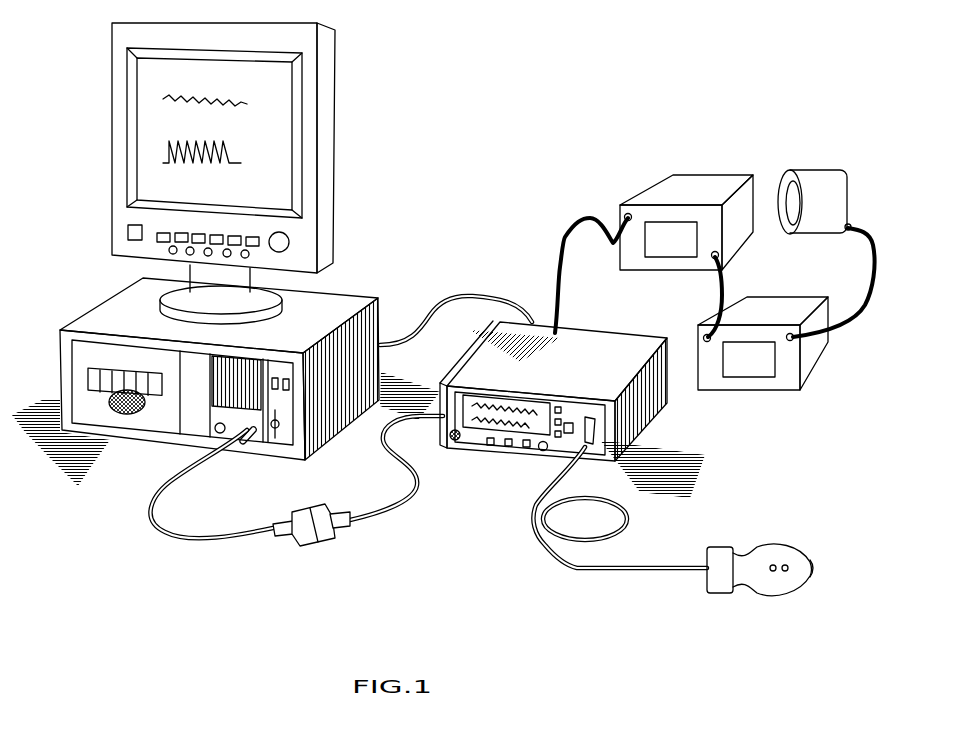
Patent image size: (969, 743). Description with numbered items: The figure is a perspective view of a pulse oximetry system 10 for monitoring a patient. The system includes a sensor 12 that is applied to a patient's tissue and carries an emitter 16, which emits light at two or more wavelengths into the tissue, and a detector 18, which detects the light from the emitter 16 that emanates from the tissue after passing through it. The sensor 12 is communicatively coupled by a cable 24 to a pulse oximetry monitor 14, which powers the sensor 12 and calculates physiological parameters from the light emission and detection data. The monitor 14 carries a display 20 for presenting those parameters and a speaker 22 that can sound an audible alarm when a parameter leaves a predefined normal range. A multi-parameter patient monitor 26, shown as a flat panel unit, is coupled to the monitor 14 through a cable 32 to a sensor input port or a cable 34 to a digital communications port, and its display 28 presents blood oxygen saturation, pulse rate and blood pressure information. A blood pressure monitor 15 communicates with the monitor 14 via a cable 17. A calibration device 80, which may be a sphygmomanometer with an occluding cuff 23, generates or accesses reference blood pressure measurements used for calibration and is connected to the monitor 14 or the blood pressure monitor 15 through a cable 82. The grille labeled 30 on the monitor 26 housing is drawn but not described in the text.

The pulse oximetry system 10 is at (565, 130).
The sensor 12 is at (822, 547).
The pulse oximetry monitor 14 is at (602, 330).
The blood pressure monitor 15 is at (700, 177).
The emitter 16 is at (772, 573).
The cable 17 is at (563, 230).
The detector 18 is at (785, 575).
The display 20 is at (480, 423).
The speaker 22 is at (453, 445).
The occluding cuff 23 is at (830, 170).
The cable 24 is at (543, 555).
The multi-parameter patient monitor 26 is at (328, 74).
The display 28 is at (153, 152).
The speaker 30 is at (115, 418).
The cable 32 is at (377, 520).
The cable 34 is at (490, 293).
The calibration device 80 is at (788, 392).
The cable 82 is at (727, 292).